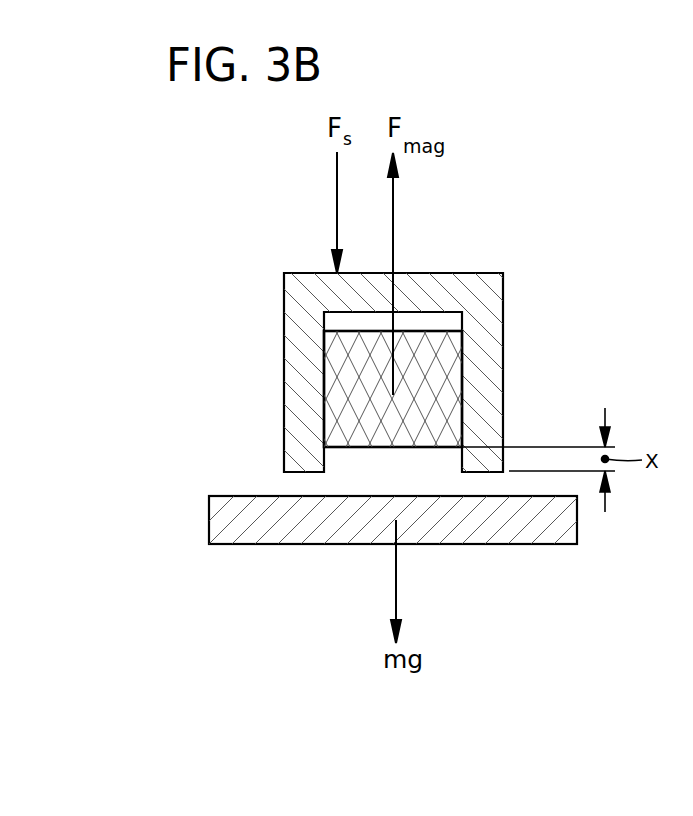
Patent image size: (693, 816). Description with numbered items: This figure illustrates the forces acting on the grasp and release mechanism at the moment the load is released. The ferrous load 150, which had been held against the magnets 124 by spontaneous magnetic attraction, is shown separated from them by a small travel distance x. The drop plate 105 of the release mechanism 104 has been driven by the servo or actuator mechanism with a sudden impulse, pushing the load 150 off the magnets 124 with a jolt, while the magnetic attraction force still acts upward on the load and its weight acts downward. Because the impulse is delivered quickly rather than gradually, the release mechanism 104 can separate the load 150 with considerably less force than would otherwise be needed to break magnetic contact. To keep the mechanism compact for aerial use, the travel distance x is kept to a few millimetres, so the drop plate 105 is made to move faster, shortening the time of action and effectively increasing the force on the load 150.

The release mechanism 104 is at (388, 372).
The drop plate 105 is at (285, 393).
The magnets 124 is at (443, 392).
The ferrous load 150 is at (248, 532).